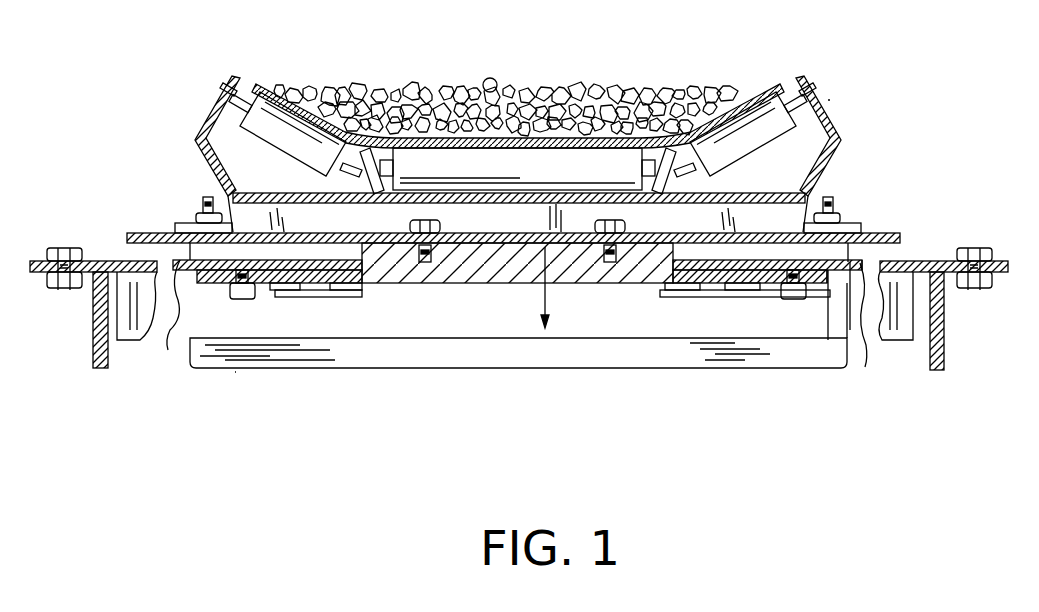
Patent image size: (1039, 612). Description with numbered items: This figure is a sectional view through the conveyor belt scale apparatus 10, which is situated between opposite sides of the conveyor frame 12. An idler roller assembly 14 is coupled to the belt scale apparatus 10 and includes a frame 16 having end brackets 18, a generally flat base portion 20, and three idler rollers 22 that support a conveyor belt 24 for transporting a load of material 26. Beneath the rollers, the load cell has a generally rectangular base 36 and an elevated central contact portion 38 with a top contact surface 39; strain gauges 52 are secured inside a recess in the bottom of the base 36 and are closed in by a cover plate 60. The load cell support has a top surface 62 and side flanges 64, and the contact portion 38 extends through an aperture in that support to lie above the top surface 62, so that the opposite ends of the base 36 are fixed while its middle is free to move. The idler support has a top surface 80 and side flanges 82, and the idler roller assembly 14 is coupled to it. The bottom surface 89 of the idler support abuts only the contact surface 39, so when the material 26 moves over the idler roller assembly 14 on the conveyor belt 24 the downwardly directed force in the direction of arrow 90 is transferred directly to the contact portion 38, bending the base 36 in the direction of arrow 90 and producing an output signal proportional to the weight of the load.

The conveyor belt scale apparatus 10 is at (228, 372).
The conveyor frame 12 is at (93, 340).
The idler roller assembly 14 is at (832, 98).
The frame 16 is at (206, 126).
The end brackets 18 is at (228, 83).
The base portion 20 is at (180, 225).
The idler rollers 22 is at (258, 95).
The conveyor belt 24 is at (745, 90).
The material 26 is at (488, 86).
The base 36 is at (212, 282).
The contact portion 38 is at (457, 247).
The top contact surface 39 is at (470, 232).
The strain gauges 52 is at (742, 293).
The cover plate 60 is at (705, 293).
The top surface 62 is at (860, 265).
The side flanges 64 is at (898, 338).
The top surface 80 is at (755, 232).
The side flanges 82 is at (607, 355).
The bottom surface 89 is at (310, 247).
The arrow 90 is at (548, 305).